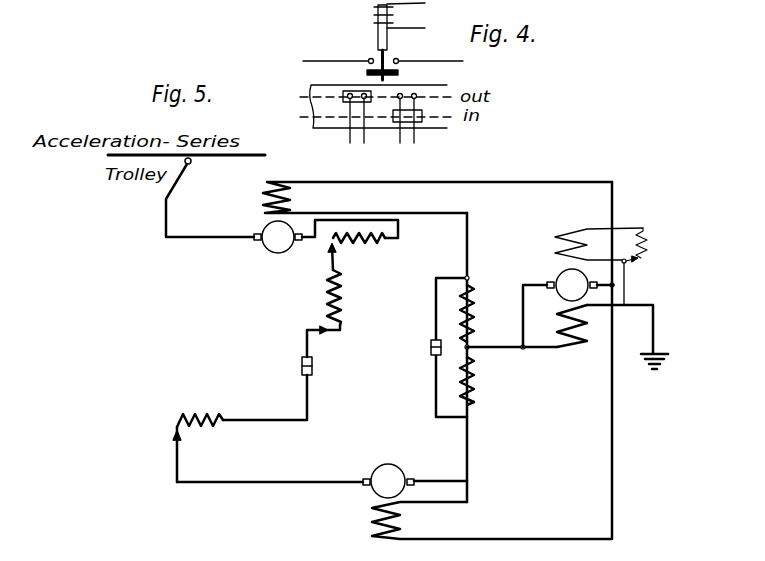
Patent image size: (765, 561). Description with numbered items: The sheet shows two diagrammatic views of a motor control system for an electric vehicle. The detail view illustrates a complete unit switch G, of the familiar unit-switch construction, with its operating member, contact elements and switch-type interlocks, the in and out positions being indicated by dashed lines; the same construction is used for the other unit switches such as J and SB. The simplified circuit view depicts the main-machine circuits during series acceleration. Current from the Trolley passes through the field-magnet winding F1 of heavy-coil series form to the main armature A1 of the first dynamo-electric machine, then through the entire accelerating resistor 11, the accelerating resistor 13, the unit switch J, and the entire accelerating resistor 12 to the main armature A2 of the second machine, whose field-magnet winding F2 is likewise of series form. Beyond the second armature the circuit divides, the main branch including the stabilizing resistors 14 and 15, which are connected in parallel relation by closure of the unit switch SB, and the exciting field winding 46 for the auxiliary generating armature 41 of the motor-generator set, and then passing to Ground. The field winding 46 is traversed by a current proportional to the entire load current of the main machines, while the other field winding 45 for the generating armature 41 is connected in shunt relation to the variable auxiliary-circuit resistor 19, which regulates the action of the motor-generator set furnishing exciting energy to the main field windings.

In FIG. 5, the accelerating resistor 11 is at (359, 249).
In FIG. 5, the accelerating resistor 12 is at (201, 416).
In FIG. 5, the accelerating resistor 13 is at (328, 306).
In FIG. 5, the stabilizing resistor 14 is at (474, 315).
In FIG. 5, the stabilizing resistor 15 is at (473, 396).
In FIG. 5, the auxiliary-circuit resistor 19 is at (648, 241).
In FIG. 5, the generating armature 41 is at (572, 285).
In FIG. 5, the field winding 45 is at (572, 229).
In FIG. 5, the field winding 46 is at (579, 346).
In FIG. 5, the main armature A1 is at (278, 237).
In FIG. 5, the main armature A2 is at (388, 481).
In FIG. 5, the field-magnet winding F1 is at (423, 197).
In FIG. 5, the field-magnet winding F2 is at (477, 360).
In FIG. 5, the unit switch J is at (298, 367).
In FIG. 5, the unit switch SB is at (421, 349).
In FIG. 4, the unit switch G is at (381, 73).
In FIG. 5, the supply-circuit conductor Ground is at (668, 378).